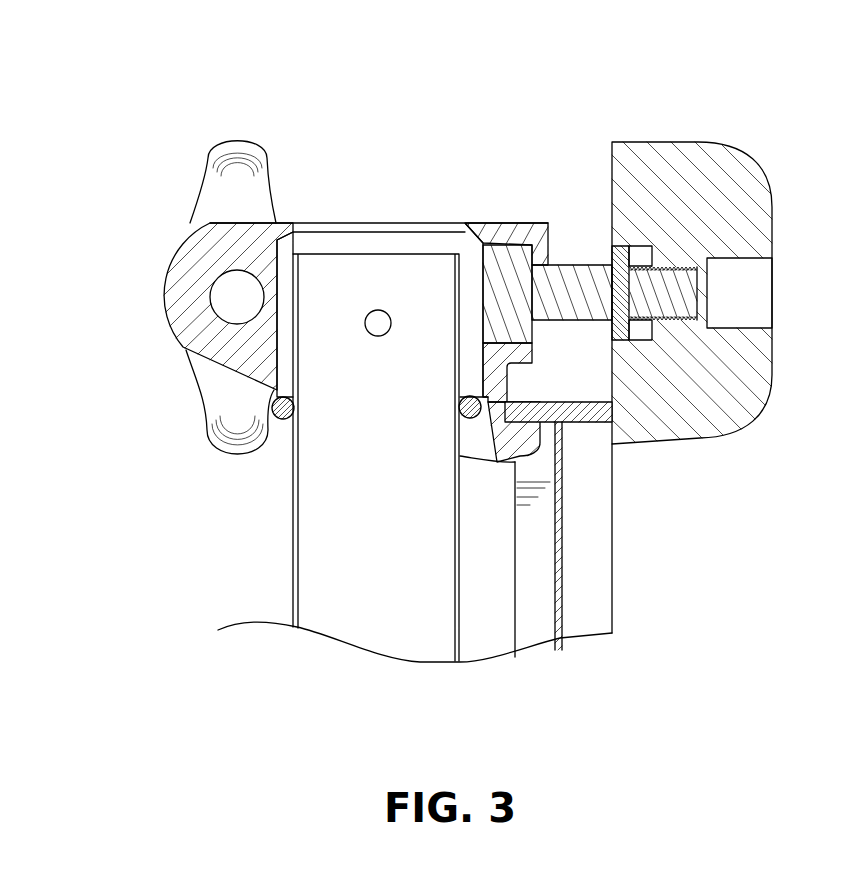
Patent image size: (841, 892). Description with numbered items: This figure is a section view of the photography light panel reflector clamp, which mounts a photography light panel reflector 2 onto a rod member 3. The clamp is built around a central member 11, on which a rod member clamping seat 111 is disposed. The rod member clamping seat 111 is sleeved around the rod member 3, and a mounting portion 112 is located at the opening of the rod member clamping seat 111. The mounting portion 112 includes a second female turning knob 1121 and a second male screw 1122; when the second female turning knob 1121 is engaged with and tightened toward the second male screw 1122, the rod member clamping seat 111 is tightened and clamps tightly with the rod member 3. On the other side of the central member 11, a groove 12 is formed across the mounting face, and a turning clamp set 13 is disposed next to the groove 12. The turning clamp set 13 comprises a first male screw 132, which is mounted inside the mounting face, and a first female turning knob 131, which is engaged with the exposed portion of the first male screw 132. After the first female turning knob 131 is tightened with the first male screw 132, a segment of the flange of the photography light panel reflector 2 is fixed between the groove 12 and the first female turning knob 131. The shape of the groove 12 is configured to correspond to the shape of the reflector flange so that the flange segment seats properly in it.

The photography light panel reflector 2 is at (593, 513).
The rod member 3 is at (312, 520).
The central member 11 is at (500, 232).
The rod member clamping seat 111 is at (402, 223).
The mounting portion 112 is at (217, 265).
The second female turning knob 1121 is at (262, 152).
The second male screw 1122 is at (222, 300).
The groove 12 is at (505, 399).
The turning clamp set 13 is at (483, 66).
The first female turning knob 131 is at (680, 161).
The first male screw 132 is at (583, 277).